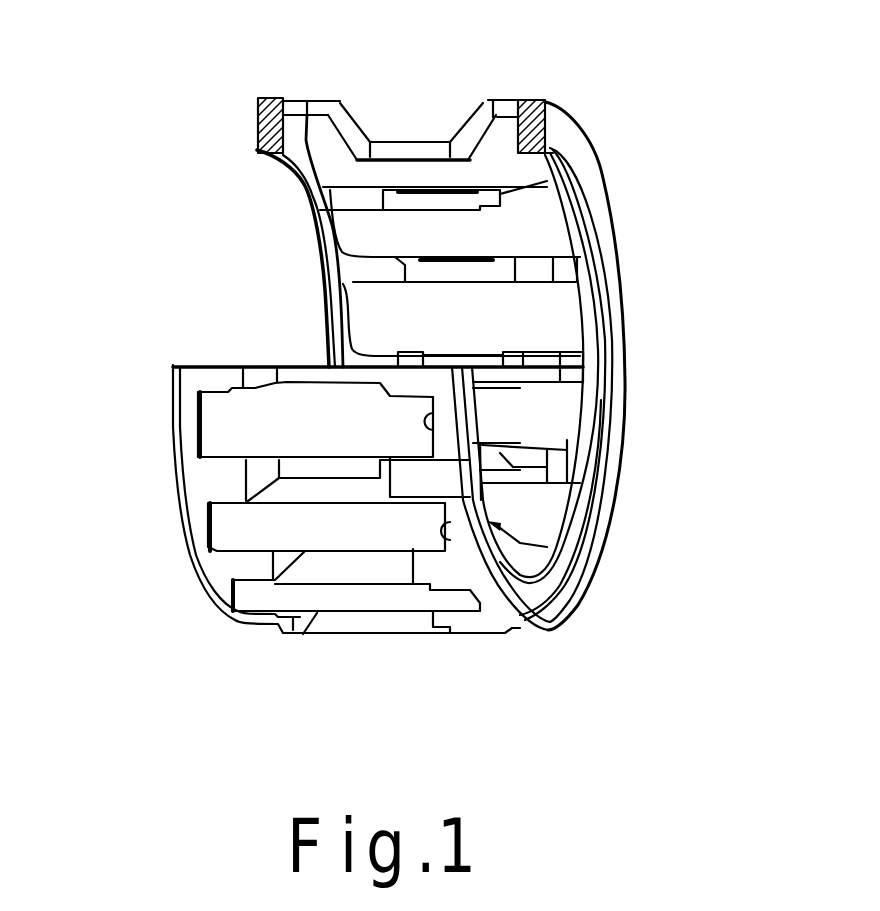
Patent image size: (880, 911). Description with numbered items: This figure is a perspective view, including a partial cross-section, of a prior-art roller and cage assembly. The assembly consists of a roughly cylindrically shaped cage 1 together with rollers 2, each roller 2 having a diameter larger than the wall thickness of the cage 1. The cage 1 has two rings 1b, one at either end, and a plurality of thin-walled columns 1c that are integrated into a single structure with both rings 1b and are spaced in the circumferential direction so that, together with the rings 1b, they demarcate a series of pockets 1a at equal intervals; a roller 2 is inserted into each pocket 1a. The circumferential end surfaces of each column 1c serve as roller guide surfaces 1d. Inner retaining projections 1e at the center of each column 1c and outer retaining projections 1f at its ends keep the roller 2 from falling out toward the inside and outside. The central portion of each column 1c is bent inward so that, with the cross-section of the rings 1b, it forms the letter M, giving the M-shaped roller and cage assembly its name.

The cage 1 is at (637, 237).
The pocket 1a is at (433, 429).
The ring 1b is at (258, 125).
The column 1c is at (432, 130).
The roller guide surface 1d is at (347, 133).
The inner retaining projection 1e is at (408, 150).
The outer retaining projection 1f is at (304, 105).
The roller 2 is at (327, 170).